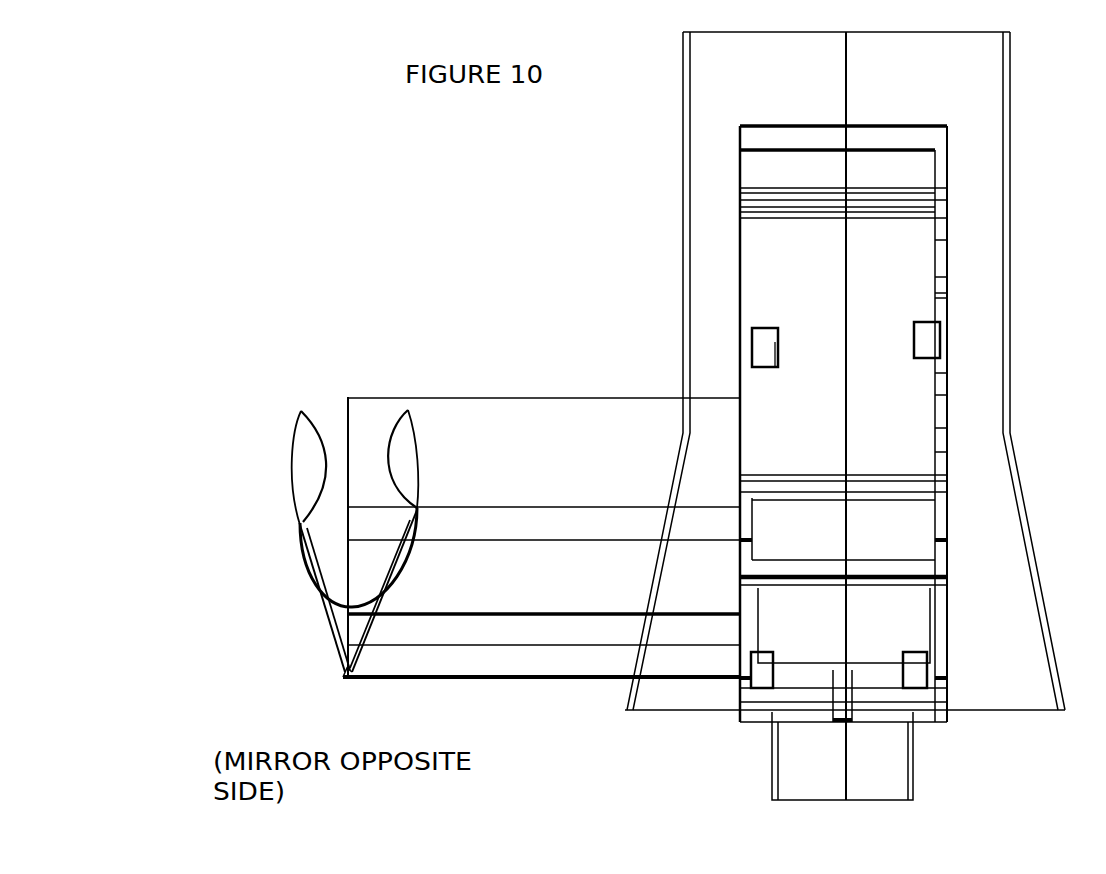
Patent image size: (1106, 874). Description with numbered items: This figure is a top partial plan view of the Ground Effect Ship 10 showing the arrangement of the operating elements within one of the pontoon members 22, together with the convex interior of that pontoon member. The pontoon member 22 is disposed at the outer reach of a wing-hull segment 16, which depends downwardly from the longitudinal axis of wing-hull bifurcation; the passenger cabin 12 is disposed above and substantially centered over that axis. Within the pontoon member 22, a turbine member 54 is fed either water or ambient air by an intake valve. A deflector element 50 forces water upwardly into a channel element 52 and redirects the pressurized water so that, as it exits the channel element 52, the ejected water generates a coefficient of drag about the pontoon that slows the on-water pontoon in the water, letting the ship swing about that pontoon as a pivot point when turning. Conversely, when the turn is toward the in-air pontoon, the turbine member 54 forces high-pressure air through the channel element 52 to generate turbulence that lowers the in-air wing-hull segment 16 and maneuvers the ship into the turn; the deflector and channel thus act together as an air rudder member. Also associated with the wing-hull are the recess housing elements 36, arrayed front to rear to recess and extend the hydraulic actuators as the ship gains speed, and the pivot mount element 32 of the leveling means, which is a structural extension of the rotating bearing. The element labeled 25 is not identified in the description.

The Ground Effect Ship 10 is at (435, 178).
The passenger cabin 12 is at (950, 300).
The wing-hull segment 16 is at (477, 398).
The pontoon member 22 is at (275, 340).
The arm end plate 25 is at (367, 407).
The pivot mount element 32 is at (860, 683).
The recess housing element 36 is at (910, 323).
The deflector element 50 is at (288, 455).
The channel element 52 is at (300, 522).
The turbine member 54 is at (333, 585).